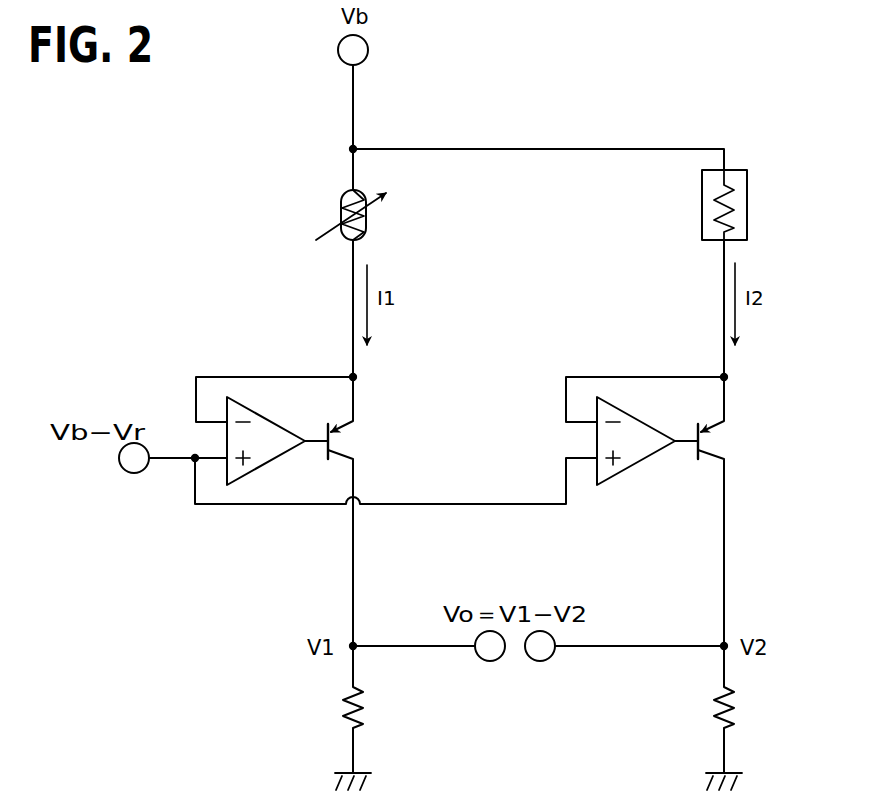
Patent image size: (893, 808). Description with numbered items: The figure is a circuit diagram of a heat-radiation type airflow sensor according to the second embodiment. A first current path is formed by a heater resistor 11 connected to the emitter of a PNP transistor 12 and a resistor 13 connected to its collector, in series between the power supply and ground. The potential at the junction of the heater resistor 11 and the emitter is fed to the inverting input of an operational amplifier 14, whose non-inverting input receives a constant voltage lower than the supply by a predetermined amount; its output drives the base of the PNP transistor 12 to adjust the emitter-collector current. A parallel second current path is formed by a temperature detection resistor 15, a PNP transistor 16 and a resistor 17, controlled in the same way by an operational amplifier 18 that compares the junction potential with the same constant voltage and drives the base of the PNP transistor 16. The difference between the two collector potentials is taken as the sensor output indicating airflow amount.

The heater resistor 11 is at (367, 225).
The PNP transistor 12 is at (348, 426).
The resistor 13 is at (365, 696).
The operational amplifier 14 is at (274, 421).
The temperature detection resistor 15 is at (702, 204).
The PNP transistor 16 is at (718, 426).
The resistor 17 is at (713, 709).
The operational amplifier 18 is at (644, 421).